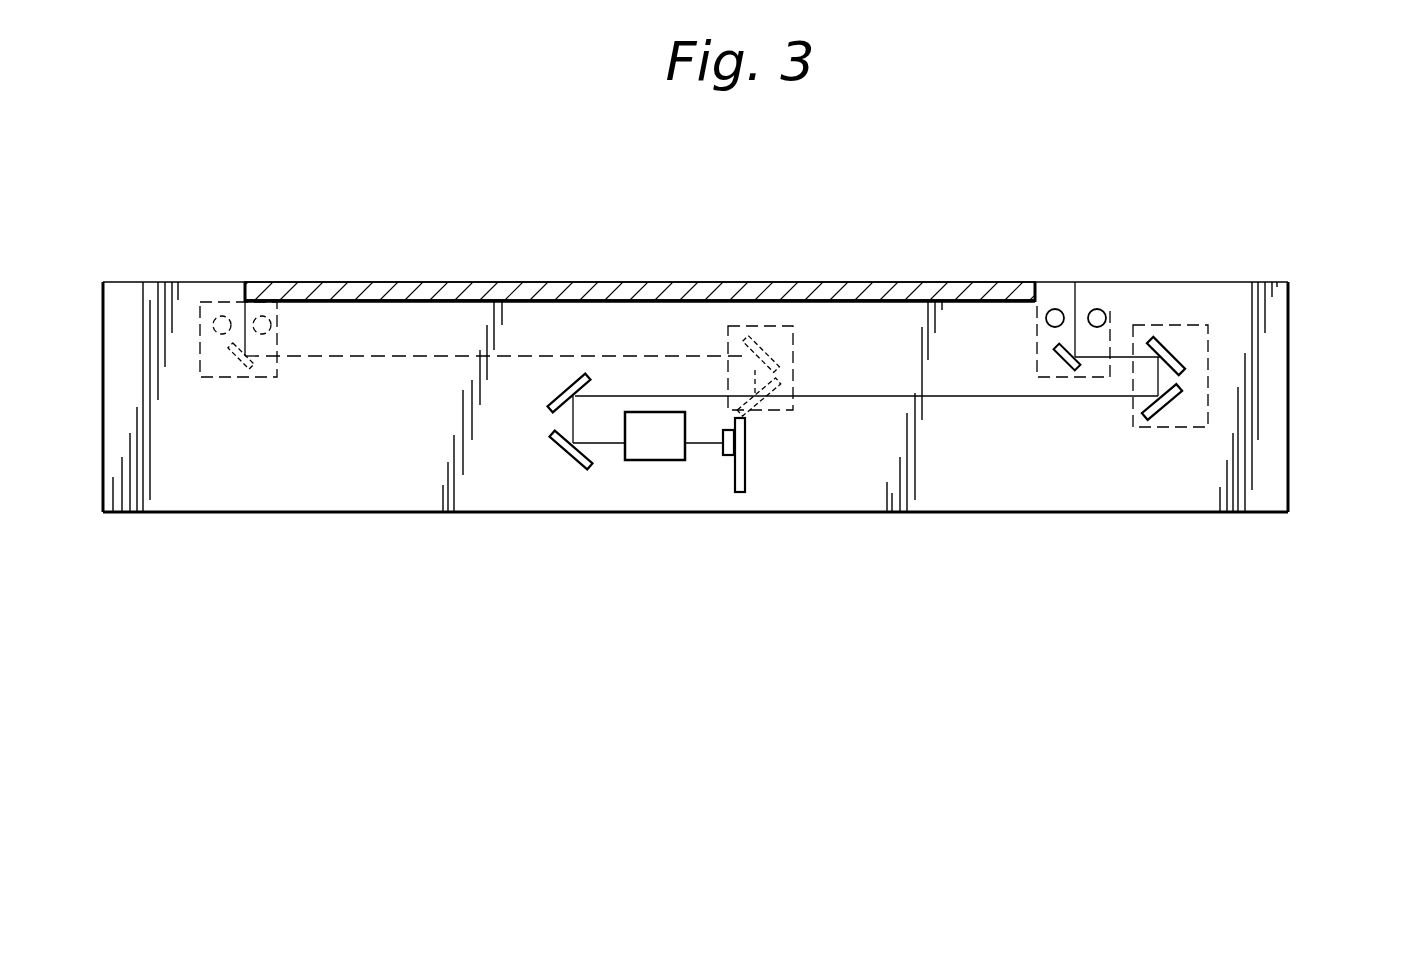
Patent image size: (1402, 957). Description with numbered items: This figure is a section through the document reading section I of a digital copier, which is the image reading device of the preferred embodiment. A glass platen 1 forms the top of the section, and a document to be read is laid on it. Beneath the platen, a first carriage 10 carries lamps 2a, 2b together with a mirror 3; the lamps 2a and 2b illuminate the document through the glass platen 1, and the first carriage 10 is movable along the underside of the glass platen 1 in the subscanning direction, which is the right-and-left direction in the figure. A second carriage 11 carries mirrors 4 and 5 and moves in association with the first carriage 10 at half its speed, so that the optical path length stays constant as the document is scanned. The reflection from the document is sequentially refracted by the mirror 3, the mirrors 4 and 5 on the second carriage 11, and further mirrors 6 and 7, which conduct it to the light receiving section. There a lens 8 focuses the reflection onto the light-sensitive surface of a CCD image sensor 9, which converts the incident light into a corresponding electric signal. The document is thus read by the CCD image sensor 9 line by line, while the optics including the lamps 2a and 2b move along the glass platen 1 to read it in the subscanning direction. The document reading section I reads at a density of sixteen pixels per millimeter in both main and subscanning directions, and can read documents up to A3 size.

The document reading section I is at (1298, 268).
The glass platen 1 is at (936, 282).
The lamp 2a is at (208, 317).
The lamp 2b is at (272, 320).
The mirror 3 is at (235, 368).
The mirror 4 is at (778, 335).
The mirror 5 is at (765, 412).
The mirror 6 is at (557, 386).
The mirror 7 is at (557, 457).
The lens 8 is at (647, 462).
The CCD image sensor 9 is at (727, 457).
The first carriage 10 is at (262, 380).
The second carriage 11 is at (795, 362).